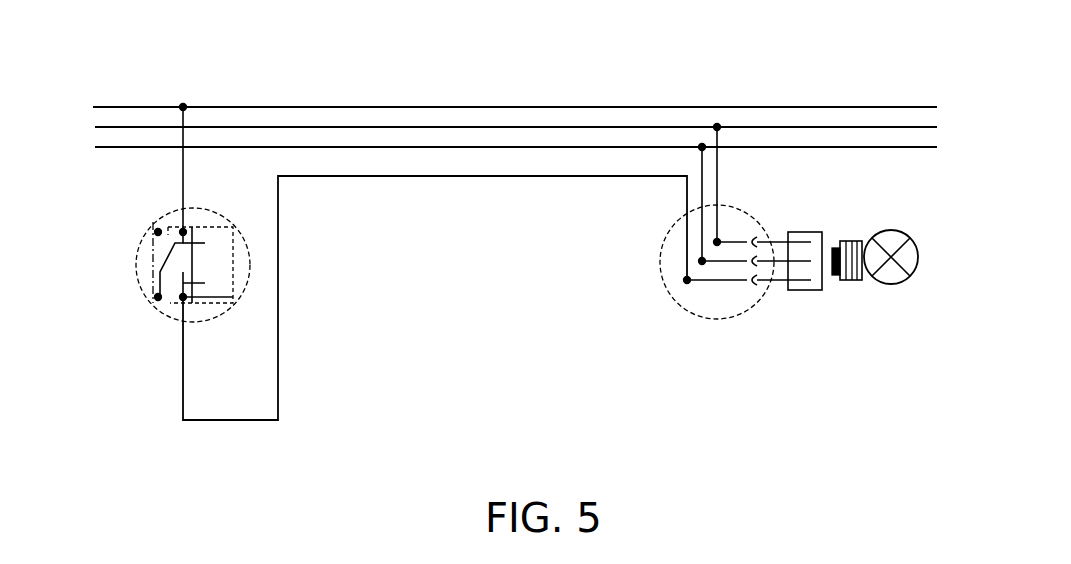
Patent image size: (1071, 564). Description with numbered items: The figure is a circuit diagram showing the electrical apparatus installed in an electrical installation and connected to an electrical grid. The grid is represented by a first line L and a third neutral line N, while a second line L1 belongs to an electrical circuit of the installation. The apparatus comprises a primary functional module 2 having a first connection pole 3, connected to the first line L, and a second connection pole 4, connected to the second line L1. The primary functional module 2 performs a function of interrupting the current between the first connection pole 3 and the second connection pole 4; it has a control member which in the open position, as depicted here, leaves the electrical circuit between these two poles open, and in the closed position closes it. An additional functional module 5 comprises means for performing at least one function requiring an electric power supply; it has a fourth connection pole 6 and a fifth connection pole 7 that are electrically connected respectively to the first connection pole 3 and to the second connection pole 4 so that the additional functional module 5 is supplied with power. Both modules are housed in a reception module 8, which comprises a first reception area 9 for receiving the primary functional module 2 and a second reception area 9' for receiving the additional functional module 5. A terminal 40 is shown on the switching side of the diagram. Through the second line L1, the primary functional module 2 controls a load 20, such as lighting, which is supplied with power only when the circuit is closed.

The first line L is at (135, 107).
The third neutral line N is at (117, 127).
The second line L1 is at (183, 387).
The primary functional module 2 is at (192, 301).
The first connection pole 3 is at (186, 230).
The second connection pole 4 is at (195, 295).
The additional functional module 5 is at (242, 313).
The fourth connection pole 6 is at (202, 243).
The fifth connection pole 7 is at (200, 281).
The reception module 8 is at (125, 277).
The first reception area 9 is at (157, 348).
The second reception area 9' is at (269, 373).
The terminal 40 is at (157, 235).
The load 20 is at (812, 310).